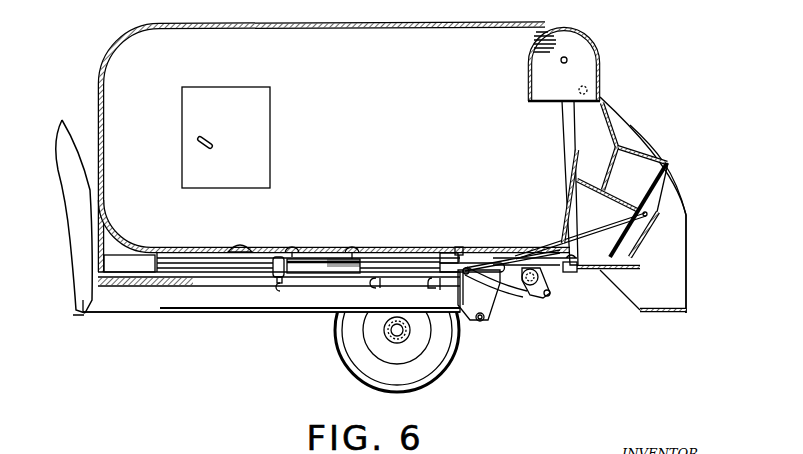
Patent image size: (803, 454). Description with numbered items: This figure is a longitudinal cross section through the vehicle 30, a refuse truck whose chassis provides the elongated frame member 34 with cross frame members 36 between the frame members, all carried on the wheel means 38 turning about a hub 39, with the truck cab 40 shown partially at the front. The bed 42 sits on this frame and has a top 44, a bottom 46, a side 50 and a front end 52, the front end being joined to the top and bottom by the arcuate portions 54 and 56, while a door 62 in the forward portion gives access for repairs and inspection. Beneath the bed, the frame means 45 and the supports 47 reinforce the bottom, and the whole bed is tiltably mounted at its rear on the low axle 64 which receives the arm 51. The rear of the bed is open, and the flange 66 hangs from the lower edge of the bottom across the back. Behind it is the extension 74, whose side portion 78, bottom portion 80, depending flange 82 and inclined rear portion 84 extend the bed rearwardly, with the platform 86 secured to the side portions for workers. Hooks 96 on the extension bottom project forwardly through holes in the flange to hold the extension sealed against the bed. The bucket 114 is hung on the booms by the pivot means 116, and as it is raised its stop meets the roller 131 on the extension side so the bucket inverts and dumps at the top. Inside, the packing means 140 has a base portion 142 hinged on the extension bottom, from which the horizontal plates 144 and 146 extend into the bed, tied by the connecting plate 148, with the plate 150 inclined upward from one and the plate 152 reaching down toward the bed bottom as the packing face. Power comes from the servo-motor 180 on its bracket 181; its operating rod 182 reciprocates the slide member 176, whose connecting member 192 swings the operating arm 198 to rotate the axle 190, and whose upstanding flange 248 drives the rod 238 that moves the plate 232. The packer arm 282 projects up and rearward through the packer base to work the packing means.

The vehicle 30 is at (158, 358).
The elongated frame member 34 is at (230, 312).
The cross frame members 36 is at (350, 294).
The wheel means 38 is at (437, 372).
The axle 39 is at (392, 331).
The truck cab 40 is at (72, 250).
The bed 42 is at (311, 143).
The top 44 is at (356, 30).
The frame means 45 is at (190, 262).
The bottom 46 is at (292, 246).
The supports 47 is at (153, 255).
The side 50 is at (368, 113).
The arm 51 is at (455, 292).
The front end 52 is at (104, 142).
The arcuate portion 54 is at (133, 36).
The arcuate portion 56 is at (116, 226).
The door 62 is at (241, 129).
The axle 64 is at (483, 325).
The flange 66 is at (574, 272).
The extension 74 is at (662, 133).
The side portion 78 is at (687, 230).
The bottom portion 80 is at (606, 268).
The depending flange 82 is at (603, 275).
The inclined rear portion 84 is at (642, 240).
The platform 86 is at (660, 312).
The hooks 96 is at (572, 258).
The bucket 114 is at (588, 28).
The pivot means 116 is at (567, 59).
The roller 131 is at (578, 87).
The packing means 140 is at (558, 179).
The base portion 142 is at (667, 205).
The horizontal plate 144 is at (655, 156).
The horizontal plate 146 is at (606, 190).
The connecting plate 148 is at (613, 155).
The plate 150 is at (615, 120).
The plate 152 is at (560, 216).
The slide member 176 is at (479, 295).
The servo-motor 180 is at (345, 273).
The bracket 181 is at (270, 283).
The operating rod 182 is at (358, 262).
The axle 190 is at (532, 286).
The connecting member 192 is at (512, 300).
The operating arm 198 is at (552, 293).
The plate 232 is at (532, 228).
The rod 238 is at (455, 250).
The flange 248 is at (440, 250).
The packer arm 282 is at (622, 222).